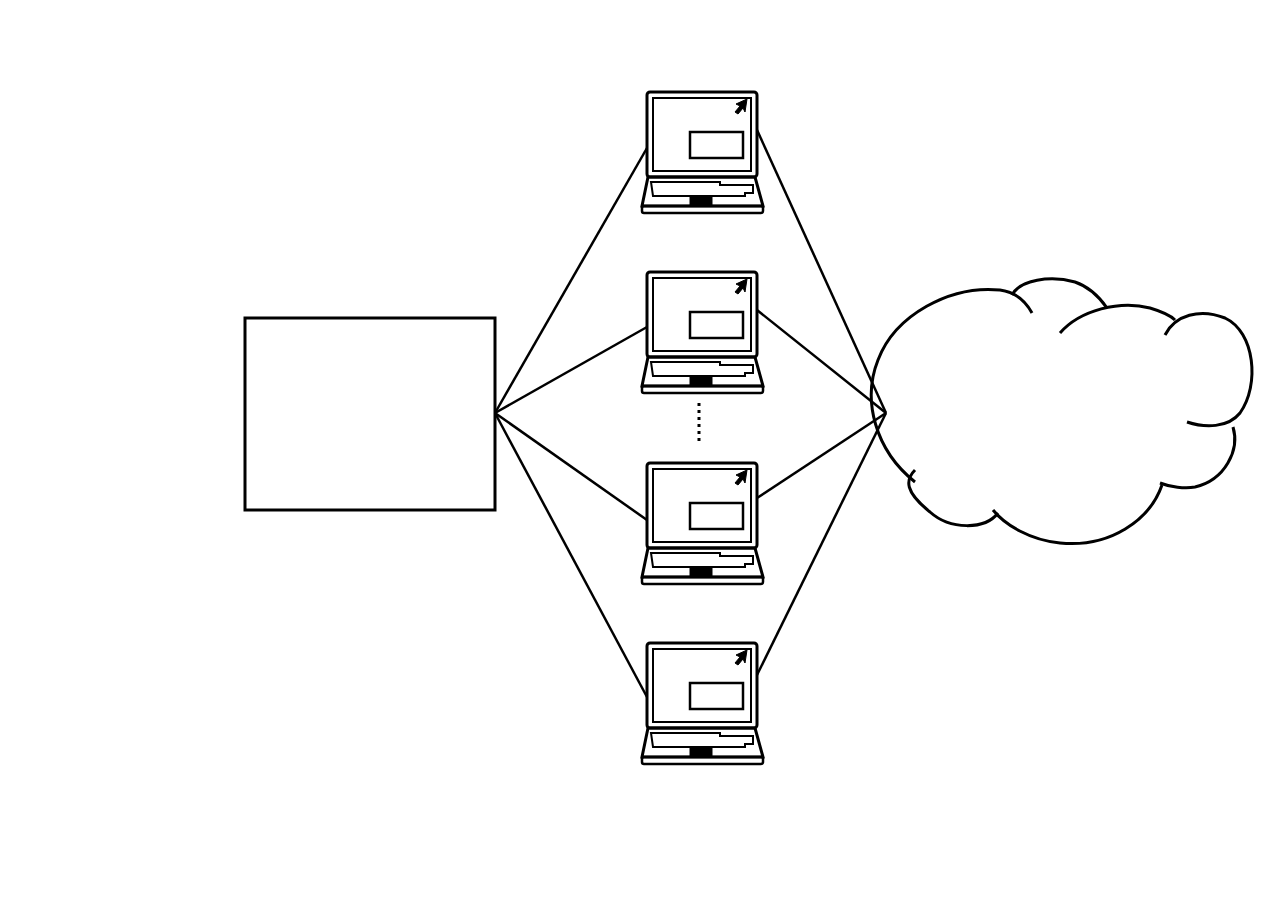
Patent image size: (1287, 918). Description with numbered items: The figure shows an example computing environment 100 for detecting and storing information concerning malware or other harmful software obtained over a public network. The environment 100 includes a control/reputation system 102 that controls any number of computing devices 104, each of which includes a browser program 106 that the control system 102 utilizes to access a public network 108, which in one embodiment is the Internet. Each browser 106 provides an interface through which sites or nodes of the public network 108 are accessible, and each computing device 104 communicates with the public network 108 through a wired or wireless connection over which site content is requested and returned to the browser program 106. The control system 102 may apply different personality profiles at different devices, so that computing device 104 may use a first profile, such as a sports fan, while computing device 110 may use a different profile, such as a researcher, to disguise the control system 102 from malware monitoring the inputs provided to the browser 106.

The computing environment 100 is at (1025, 138).
The control/reputation system 102 is at (370, 414).
The computing device 104 is at (752, 126).
The browser program 106 is at (745, 147).
The public network 108 is at (1061, 411).
The computing device 110 is at (670, 764).